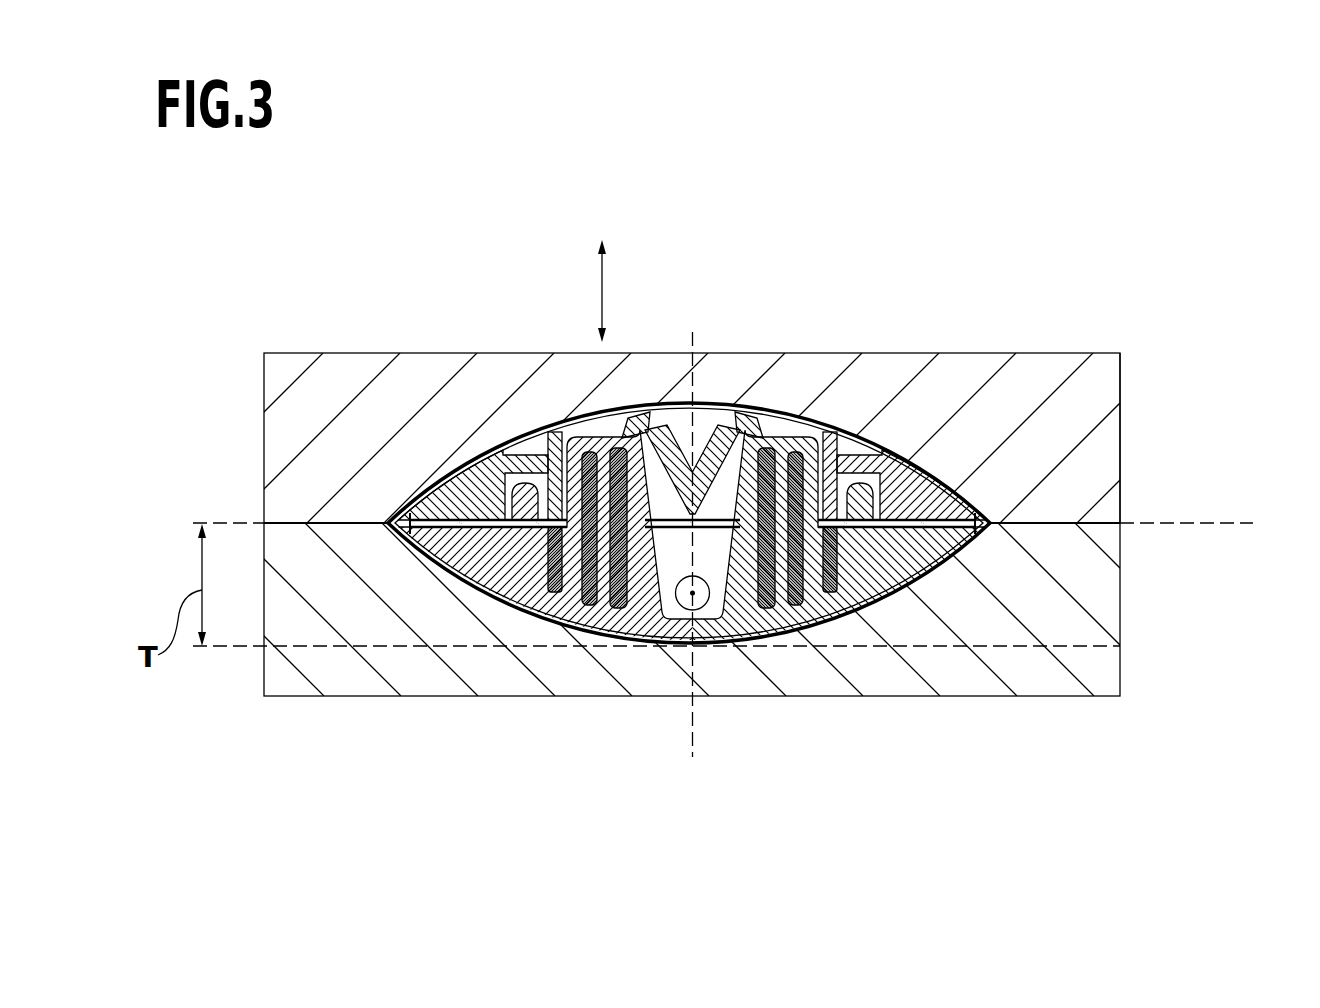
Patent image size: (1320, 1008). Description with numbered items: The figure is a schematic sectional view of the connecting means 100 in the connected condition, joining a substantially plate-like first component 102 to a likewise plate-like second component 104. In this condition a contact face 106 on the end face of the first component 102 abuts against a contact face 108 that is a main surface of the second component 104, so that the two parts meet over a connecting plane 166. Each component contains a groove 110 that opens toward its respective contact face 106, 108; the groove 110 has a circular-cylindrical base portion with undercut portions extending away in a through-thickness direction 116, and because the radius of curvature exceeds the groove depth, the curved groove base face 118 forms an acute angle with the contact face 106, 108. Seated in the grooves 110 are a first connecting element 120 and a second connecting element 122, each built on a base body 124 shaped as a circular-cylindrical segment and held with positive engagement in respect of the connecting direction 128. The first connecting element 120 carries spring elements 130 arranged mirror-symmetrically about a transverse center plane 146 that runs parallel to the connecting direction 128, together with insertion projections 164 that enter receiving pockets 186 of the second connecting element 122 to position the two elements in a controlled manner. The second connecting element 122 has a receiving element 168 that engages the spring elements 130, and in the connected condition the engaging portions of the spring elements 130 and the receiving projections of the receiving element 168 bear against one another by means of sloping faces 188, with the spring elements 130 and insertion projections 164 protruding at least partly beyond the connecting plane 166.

The connecting means 100 is at (1050, 315).
The first component 102 is at (356, 681).
The second component 104 is at (343, 378).
The contact face 106 is at (1060, 513).
The contact face 108 is at (1105, 525).
The groove 110 is at (883, 447).
The through-thickness direction 116 is at (692, 593).
The groove base face 118 is at (917, 467).
The first connecting element 120 is at (453, 538).
The second connecting element 122 is at (457, 503).
The base body 124 is at (480, 478).
The connecting direction 128 is at (601, 290).
The spring elements 130 is at (782, 411).
The transverse center plane 146 is at (694, 720).
The insertion projections 164 is at (862, 483).
The connecting plane 166 is at (1187, 523).
The receiving element 168 is at (758, 435).
The receiving pockets 186 is at (873, 462).
The sloping faces 188 is at (735, 410).